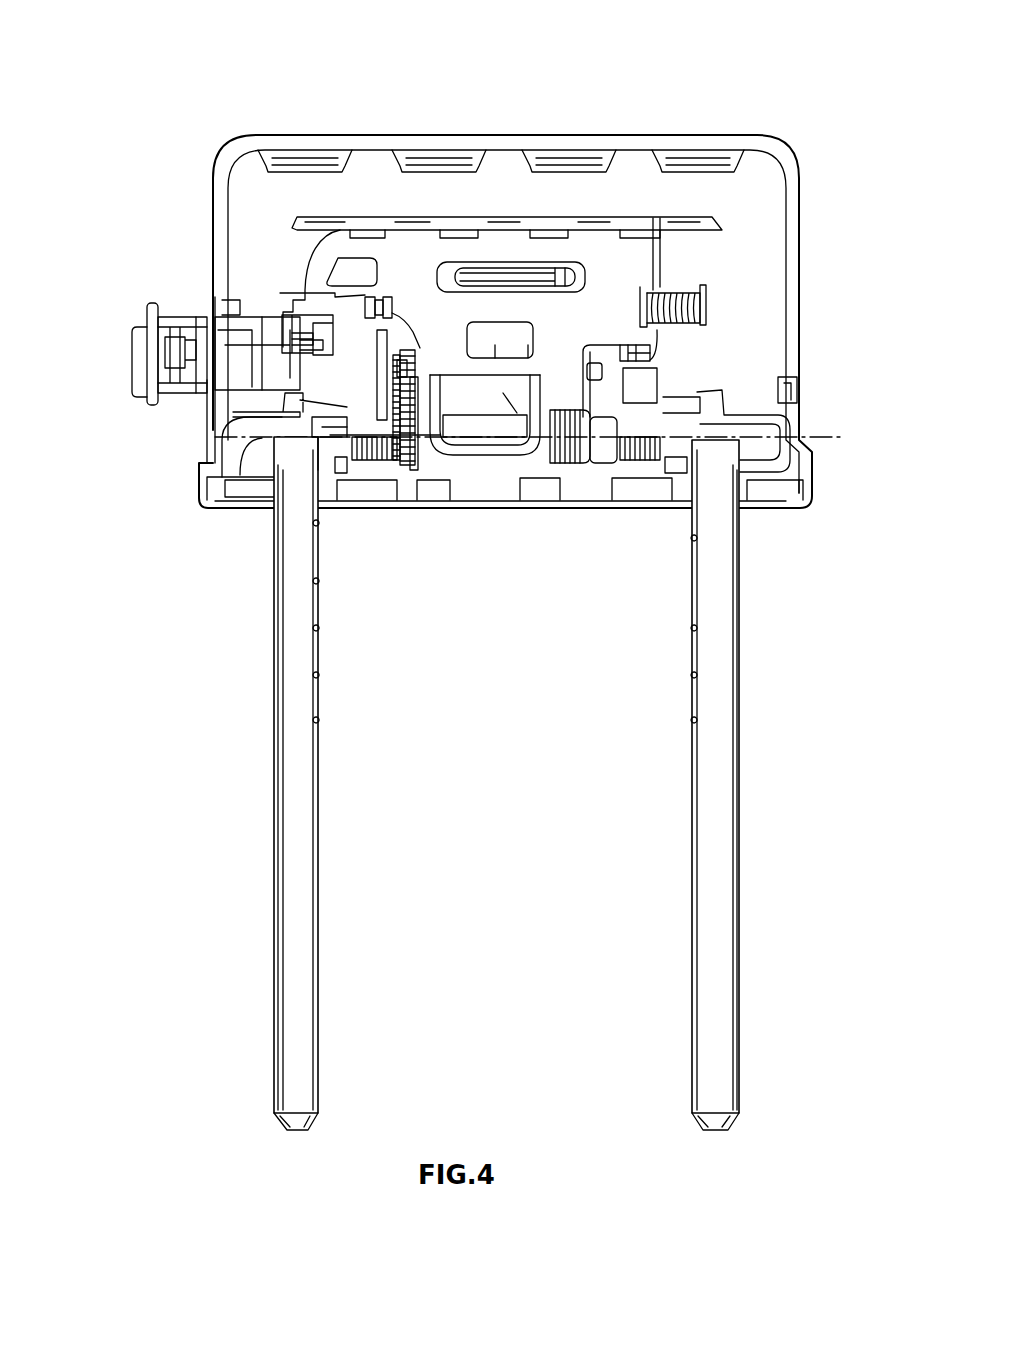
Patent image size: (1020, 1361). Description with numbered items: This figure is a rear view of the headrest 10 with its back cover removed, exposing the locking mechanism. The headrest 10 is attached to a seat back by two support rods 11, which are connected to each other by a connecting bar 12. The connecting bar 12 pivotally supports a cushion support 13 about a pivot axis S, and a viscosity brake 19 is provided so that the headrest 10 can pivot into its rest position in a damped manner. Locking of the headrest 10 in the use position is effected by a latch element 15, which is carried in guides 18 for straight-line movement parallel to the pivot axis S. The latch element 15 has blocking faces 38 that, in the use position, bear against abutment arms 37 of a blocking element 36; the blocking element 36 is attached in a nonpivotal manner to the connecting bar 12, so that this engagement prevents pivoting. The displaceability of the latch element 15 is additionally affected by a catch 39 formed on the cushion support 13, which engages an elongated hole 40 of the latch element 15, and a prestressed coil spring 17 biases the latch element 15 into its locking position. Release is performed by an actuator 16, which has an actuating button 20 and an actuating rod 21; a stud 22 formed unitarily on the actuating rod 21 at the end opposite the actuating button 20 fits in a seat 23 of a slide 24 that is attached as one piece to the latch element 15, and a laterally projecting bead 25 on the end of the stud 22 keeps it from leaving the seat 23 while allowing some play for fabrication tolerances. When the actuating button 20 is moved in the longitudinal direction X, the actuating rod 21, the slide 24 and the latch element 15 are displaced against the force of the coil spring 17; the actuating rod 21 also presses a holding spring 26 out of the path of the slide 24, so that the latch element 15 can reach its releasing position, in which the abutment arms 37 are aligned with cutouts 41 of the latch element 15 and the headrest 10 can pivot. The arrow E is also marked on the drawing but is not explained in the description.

The headrest 10 is at (486, 258).
The support rods 11 is at (298, 856).
The connecting bar 12 is at (447, 437).
The cushion support 13 is at (238, 207).
The latch element 15 is at (405, 245).
The actuator 16 is at (126, 323).
The coil spring 17 is at (683, 282).
The guides 18 is at (367, 227).
The viscosity brake 19 is at (410, 472).
The actuating button 20 is at (124, 354).
The actuating rod 21 is at (266, 360).
The stud 22 is at (303, 335).
The seat 23 is at (280, 318).
The slide 24 is at (292, 342).
The bead 25 is at (311, 357).
The holding spring 26 is at (232, 430).
The blocking element 36 is at (548, 417).
The abutment arms 37 is at (436, 400).
The blocking faces 38 is at (440, 428).
The catch 39 is at (587, 275).
The elongated hole 40 is at (460, 272).
The cutouts 41 is at (530, 370).
The insertion direction E is at (277, 280).
The longitudinal direction X is at (116, 273).
The pivot axis S is at (539, 452).